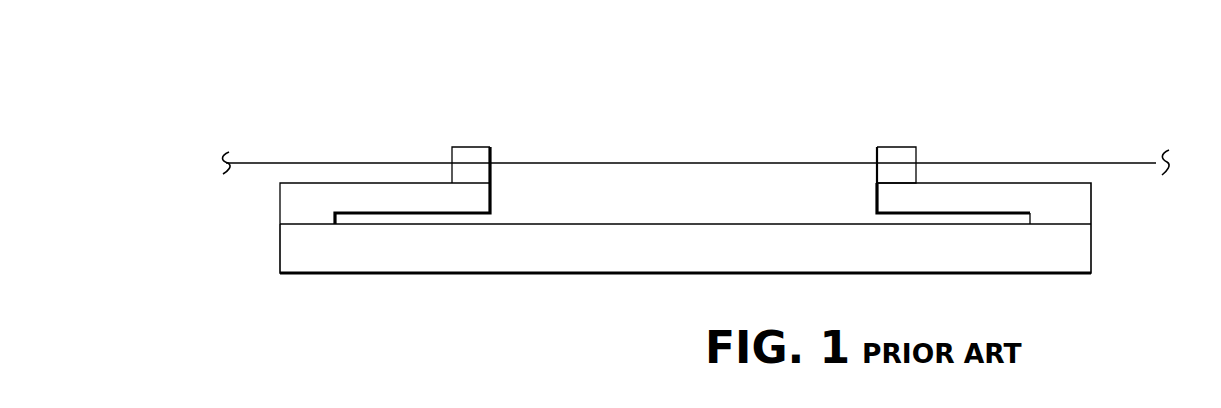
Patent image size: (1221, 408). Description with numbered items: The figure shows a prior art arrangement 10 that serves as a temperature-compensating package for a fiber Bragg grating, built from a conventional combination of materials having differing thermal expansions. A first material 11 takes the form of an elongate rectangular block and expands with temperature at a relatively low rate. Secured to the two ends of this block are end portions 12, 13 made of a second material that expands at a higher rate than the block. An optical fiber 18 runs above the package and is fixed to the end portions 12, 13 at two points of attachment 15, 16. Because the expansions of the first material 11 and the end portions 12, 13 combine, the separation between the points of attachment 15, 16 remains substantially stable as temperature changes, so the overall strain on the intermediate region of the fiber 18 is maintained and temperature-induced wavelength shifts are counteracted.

The arrangement 10 is at (1045, 115).
The first material 11 is at (495, 262).
The end portion 12 is at (295, 198).
The end portion 13 is at (1070, 200).
The point of attachment 15 is at (473, 147).
The point of attachment 16 is at (890, 148).
The optical fiber 18 is at (665, 163).